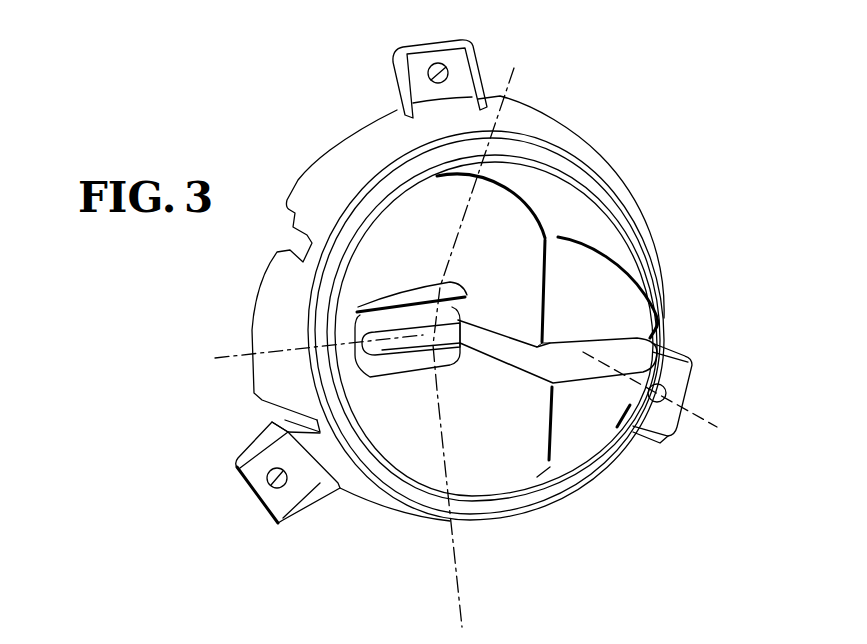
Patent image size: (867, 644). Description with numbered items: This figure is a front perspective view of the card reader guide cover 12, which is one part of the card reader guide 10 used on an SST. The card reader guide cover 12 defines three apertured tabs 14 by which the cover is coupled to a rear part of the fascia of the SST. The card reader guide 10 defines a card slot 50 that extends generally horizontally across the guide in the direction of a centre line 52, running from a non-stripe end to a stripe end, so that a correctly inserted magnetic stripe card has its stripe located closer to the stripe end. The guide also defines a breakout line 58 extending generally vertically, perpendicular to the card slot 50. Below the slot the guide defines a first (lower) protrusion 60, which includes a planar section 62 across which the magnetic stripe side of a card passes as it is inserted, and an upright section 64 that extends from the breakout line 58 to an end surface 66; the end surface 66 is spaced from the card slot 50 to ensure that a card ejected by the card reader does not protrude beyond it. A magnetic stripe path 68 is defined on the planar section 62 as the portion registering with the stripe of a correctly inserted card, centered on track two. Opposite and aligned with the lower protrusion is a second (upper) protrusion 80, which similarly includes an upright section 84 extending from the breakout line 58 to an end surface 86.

The card reader guide 10 is at (146, 383).
The card reader guide cover 12 is at (318, 157).
The apertured tabs 14 is at (430, 42).
The card slot 50 is at (402, 338).
The centre line 52 is at (240, 362).
The breakout line 58 is at (455, 573).
The first (lower) protrusion 60 is at (605, 501).
The planar section 62 is at (617, 352).
The upright section 64 is at (495, 463).
The end surface 66 is at (590, 428).
The magnetic stripe path 68 is at (690, 408).
The second (upper) protrusion 80 is at (678, 286).
The upright section 84 is at (517, 243).
The end surface 86 is at (603, 280).